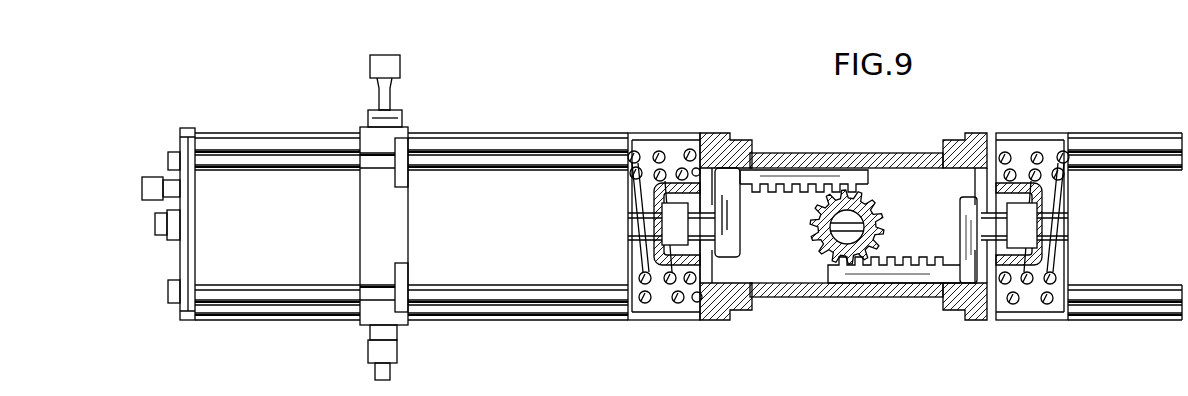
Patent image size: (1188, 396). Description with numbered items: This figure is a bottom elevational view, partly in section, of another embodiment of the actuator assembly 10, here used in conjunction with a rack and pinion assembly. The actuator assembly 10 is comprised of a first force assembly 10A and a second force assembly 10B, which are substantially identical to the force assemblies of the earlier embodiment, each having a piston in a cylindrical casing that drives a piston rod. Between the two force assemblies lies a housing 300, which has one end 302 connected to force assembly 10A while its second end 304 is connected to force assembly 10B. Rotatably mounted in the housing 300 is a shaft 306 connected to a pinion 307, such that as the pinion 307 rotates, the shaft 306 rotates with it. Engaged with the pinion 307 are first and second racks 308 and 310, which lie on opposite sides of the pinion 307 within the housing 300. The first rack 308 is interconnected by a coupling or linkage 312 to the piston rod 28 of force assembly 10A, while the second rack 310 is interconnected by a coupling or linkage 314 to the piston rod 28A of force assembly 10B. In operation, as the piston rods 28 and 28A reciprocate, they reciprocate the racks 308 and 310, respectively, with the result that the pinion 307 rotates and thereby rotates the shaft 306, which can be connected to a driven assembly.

The actuator assembly 10 is at (605, 72).
The first force assembly 10A is at (507, 125).
The second force assembly 10B is at (1111, 122).
The piston rod 28 is at (641, 227).
The piston rod 28A is at (1053, 225).
The housing 300 is at (852, 318).
The one end of housing 302 is at (745, 313).
The second end of housing 304 is at (957, 313).
The shaft 306 is at (857, 227).
The pinion 307 is at (847, 200).
The first rack 308 is at (780, 178).
The second rack 310 is at (903, 273).
The coupling or linkage 312 is at (675, 223).
The coupling or linkage 314 is at (1027, 232).